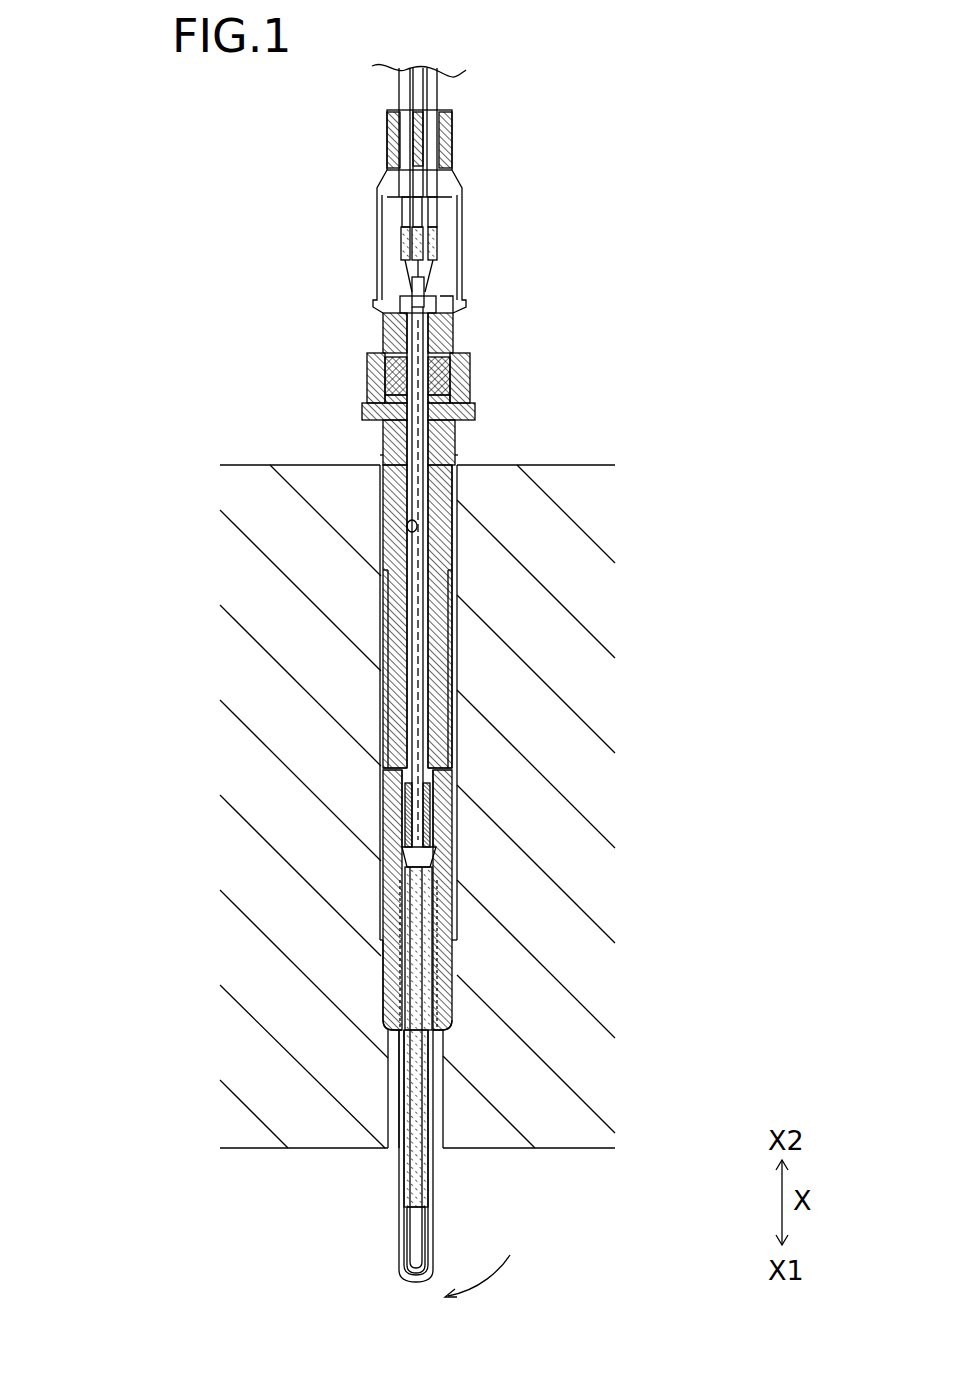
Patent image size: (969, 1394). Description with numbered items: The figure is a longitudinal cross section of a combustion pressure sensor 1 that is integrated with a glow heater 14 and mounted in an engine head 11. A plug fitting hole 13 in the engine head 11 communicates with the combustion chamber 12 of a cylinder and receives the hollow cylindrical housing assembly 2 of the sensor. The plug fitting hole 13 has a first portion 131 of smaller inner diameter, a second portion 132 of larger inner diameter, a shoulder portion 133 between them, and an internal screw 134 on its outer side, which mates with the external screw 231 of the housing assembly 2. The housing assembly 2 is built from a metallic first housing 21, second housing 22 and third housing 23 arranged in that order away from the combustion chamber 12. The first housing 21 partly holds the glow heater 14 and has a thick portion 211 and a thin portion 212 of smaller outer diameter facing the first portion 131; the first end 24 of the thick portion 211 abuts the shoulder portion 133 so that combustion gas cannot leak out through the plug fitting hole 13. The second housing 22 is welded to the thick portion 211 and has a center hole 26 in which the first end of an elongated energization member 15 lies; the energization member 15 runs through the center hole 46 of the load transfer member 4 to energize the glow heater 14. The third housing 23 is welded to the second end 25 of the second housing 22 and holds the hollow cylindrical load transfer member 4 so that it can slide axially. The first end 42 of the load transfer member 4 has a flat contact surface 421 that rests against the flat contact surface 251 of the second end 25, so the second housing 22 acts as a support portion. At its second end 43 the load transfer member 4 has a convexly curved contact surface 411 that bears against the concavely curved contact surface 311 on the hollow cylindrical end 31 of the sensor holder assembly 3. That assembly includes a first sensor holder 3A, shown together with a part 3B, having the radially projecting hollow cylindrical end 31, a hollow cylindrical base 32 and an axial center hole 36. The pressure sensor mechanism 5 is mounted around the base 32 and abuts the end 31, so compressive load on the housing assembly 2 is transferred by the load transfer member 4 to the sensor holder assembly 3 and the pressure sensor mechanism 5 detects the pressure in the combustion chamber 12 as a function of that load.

The combustion pressure sensor 1 is at (521, 166).
The housing assembly 2 is at (629, 1026).
The sensor holder assembly 3 is at (437, 358).
The first sensor holder 3A is at (455, 387).
The connector upper portion 3B is at (457, 327).
The load transfer member 4 is at (437, 650).
The pressure sensor mechanism 5 is at (385, 372).
The engine head 11 is at (275, 872).
The combustion chamber 12 is at (497, 1269).
The plug fitting hole 13 is at (219, 657).
The first portion 131 is at (390, 1108).
The second portion 132 is at (388, 603).
The shoulder portion 133 is at (382, 993).
The internal screw 134 is at (455, 563).
The glow heater 14 is at (423, 1187).
The energization member 15 is at (418, 722).
The first housing 21 is at (600, 1074).
The thick portion 211 is at (443, 973).
The thin portion 212 is at (440, 1062).
The second housing 22 is at (440, 882).
The third housing 23 is at (453, 770).
The external screw 231 is at (456, 524).
The first end 24 is at (447, 1012).
The second end 25 is at (448, 502).
The flat contact surface 251 is at (393, 1020).
The center hole 26 is at (435, 818).
The hollow cylindrical end 31 is at (500, 438).
The concavely curved contact surface 311 is at (477, 411).
The hollow cylindrical base 32 is at (390, 320).
The center hole 36 is at (452, 298).
The first end 42 is at (246, 885).
The flat contact surface 421 is at (385, 790).
The second end 43 is at (305, 415).
The convexly curved contact surface 411 is at (368, 387).
The center hole 46 is at (410, 525).